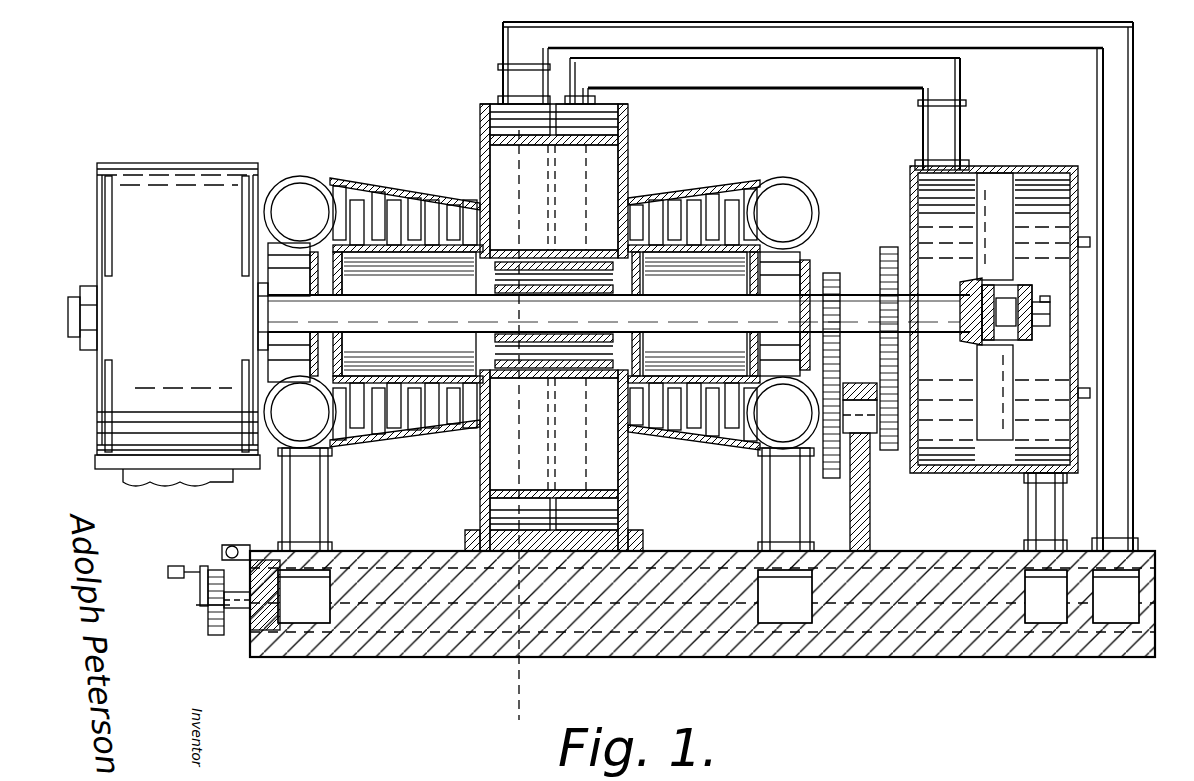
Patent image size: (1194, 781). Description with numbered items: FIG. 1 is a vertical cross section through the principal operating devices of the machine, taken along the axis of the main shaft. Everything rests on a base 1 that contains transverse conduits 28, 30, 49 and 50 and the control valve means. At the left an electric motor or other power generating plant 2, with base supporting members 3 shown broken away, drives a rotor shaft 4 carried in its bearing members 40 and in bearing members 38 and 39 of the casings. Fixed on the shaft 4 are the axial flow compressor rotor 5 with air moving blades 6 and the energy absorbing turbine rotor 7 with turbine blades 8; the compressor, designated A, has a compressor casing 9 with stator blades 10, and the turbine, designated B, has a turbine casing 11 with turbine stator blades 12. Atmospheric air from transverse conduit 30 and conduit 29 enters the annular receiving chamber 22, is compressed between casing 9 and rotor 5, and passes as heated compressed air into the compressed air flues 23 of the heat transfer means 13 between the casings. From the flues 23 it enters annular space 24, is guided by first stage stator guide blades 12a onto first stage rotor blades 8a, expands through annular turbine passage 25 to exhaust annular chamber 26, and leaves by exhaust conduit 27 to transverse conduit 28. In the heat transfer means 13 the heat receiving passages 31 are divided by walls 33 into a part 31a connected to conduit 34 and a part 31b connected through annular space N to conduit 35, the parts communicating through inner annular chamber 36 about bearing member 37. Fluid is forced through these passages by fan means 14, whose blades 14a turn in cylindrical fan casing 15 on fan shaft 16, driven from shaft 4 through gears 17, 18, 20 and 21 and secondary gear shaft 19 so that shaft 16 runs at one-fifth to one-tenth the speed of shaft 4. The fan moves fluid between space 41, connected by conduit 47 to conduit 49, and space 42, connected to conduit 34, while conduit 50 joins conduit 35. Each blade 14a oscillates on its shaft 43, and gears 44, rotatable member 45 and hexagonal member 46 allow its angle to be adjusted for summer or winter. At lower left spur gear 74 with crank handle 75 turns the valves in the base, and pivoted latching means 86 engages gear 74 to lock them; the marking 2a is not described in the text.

The base 1 is at (918, 660).
The electric motor or other power generating plant 2 is at (100, 232).
The pipe connection 2a is at (576, 84).
The base supporting members 3 is at (1172, 596).
The rotor shaft 4 is at (74, 318).
The axial flow air compressor rotor 5 is at (340, 290).
The air compressing or moving blades 6 is at (340, 215).
The energy absorbing turbine rotor 7 is at (648, 278).
The turbine blades 8 is at (730, 228).
The first stage of turbine rotor blades 8a is at (688, 160).
The air compressor casing 9 is at (386, 192).
The stator blades 10 is at (357, 186).
The turbine casing 11 is at (708, 194).
The turbine stator blades 12 is at (682, 196).
The first stage of turbine stator guide blades 12a is at (650, 200).
The heat transfer means 13 is at (480, 170).
The air fan means 14 is at (962, 350).
The fan blades 14a is at (1012, 276).
The fan casing 15 is at (1034, 166).
The fan shaft 16 is at (920, 300).
The gear 17 is at (840, 280).
The meshed gear 18 is at (840, 376).
The secondary gear shaft 19 is at (860, 400).
The gear 20 is at (878, 455).
The meshed gear 21 is at (886, 247).
The annular air receiving chamber 22 is at (297, 178).
The compressed air flues 23 is at (554, 317).
The annular space 24 is at (628, 198).
The annular turbine passage 25 is at (735, 188).
The exhaust annular chamber 26 is at (783, 313).
The exhaust conduit 27 is at (762, 508).
The transverse conduit 28 is at (785, 596).
The conduit 29 is at (328, 512).
The transverse conduit 30 is at (304, 596).
The heat receiving passages 31 is at (615, 330).
The part of heat receiving space 31a is at (618, 115).
The part of heat receiving space 31b is at (495, 126).
The walls 33 is at (560, 188).
The conduit 34 is at (658, 80).
The conduit 35 is at (503, 30).
The inner annular chamber 36 is at (545, 252).
The bearing member 37 is at (576, 296).
The bearing member 38 is at (268, 360).
The bearing member 39 is at (810, 255).
The bearing members 40 is at (258, 312).
The space 41 is at (1042, 320).
The space 42 is at (947, 320).
The shaft 43 is at (995, 350).
The gears 44 is at (972, 292).
The rotatable member 45 is at (1050, 316).
The hexagonal member 46 is at (1050, 308).
The conduit 47 is at (1028, 512).
The conduit 49 is at (1046, 596).
The conduit 50 is at (1116, 596).
The spur gear 74 is at (218, 635).
The crank handle 75 is at (178, 566).
The pivoted latching means 86 is at (212, 556).
The axial flow compressor A is at (322, 172).
The turbine B is at (768, 178).
The annular space N is at (530, 495).